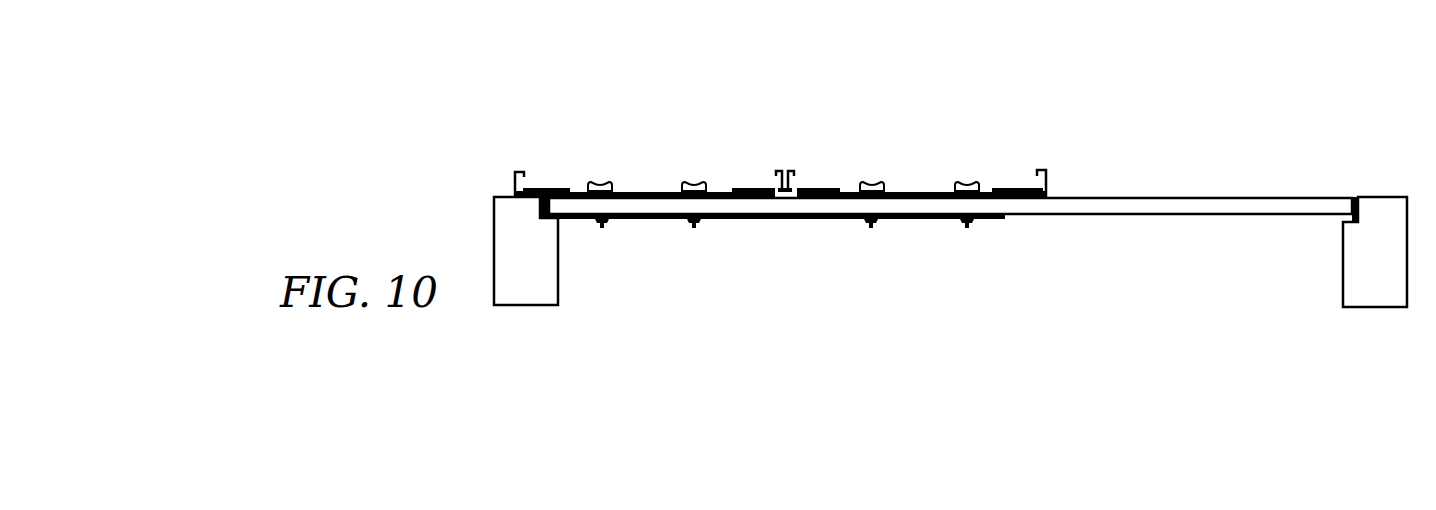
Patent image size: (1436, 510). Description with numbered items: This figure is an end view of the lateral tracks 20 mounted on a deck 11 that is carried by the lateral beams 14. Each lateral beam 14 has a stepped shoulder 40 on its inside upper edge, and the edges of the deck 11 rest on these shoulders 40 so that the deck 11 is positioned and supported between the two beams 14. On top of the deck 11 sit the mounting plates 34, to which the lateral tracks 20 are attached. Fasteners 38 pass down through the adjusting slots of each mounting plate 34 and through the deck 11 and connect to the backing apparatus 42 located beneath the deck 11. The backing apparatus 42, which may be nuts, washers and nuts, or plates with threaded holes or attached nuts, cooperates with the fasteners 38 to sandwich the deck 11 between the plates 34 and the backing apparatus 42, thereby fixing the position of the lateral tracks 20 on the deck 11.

The deck 11 is at (1123, 204).
The lateral beam 14 is at (508, 250).
The lateral track 20 is at (513, 171).
The mounting plate 34 is at (578, 189).
The fastener 38 is at (610, 182).
The stepped shoulder 40 is at (548, 225).
The backing apparatus 42 is at (604, 228).